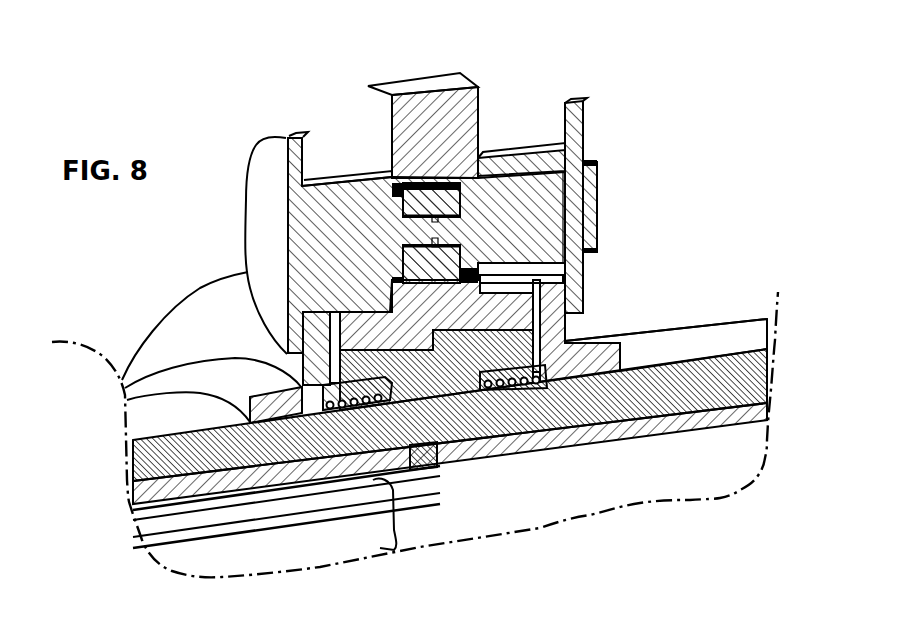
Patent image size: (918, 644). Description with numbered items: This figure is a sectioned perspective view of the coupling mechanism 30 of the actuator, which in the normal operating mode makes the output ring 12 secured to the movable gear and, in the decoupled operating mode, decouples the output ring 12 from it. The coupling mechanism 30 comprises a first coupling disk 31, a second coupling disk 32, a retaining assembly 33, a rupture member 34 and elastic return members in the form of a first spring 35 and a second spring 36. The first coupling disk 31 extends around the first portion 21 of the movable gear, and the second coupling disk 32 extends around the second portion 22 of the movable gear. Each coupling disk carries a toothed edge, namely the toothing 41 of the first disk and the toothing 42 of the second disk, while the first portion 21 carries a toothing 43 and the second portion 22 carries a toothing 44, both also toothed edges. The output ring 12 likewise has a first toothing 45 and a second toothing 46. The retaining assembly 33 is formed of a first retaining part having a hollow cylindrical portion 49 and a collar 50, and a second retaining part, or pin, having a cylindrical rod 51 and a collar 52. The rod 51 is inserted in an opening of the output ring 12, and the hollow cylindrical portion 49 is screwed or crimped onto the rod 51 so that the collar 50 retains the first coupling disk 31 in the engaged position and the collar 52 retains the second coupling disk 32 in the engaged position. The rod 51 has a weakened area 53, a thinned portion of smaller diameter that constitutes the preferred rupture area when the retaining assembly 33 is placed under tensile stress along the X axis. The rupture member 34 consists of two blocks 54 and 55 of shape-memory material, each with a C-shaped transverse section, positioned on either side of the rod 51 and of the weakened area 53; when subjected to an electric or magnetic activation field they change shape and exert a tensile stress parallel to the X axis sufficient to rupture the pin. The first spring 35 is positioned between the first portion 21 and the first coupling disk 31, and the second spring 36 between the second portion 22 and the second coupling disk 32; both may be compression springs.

The output ring 12 is at (434, 103).
The first portion of the movable gear 21 is at (713, 380).
The second portion of the movable gear 22 is at (188, 462).
The coupling mechanism 30 is at (258, 78).
The first coupling disk 31 is at (637, 333).
The second coupling disk 32 is at (192, 330).
The retaining assembly 33 is at (246, 218).
The rupture member 34 is at (429, 184).
The first spring 35 is at (510, 387).
The second spring 36 is at (382, 335).
The toothing of the first coupling disk 41 is at (533, 374).
The toothing of the second coupling disk 42 is at (386, 388).
The toothing of the first portion 43 is at (538, 346).
The toothing of the second portion 44 is at (333, 368).
The first toothing of the output ring 45 is at (536, 306).
The second toothing of the output ring 46 is at (313, 338).
The hollow cylindrical portion 49 is at (513, 163).
The collar of the first retaining part 50 is at (567, 100).
The cylindrical rod 51 is at (332, 197).
The collar of the second retaining part 52 is at (290, 137).
The weakened area 53 is at (438, 232).
The first block of the rupture member 54 is at (455, 200).
The second block of the rupture member 55 is at (438, 263).